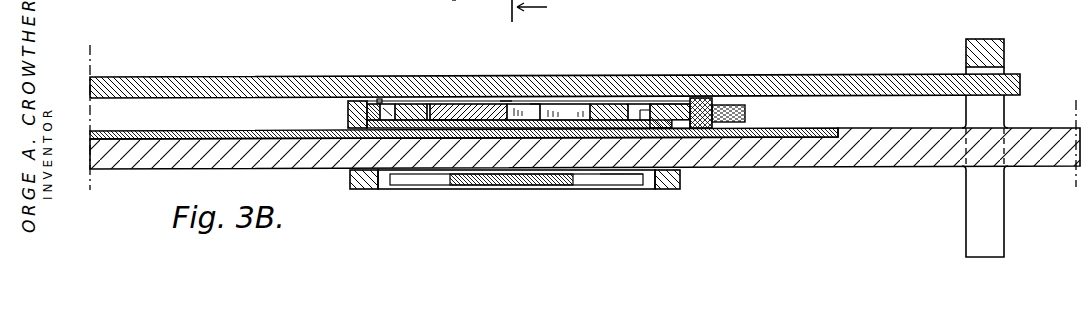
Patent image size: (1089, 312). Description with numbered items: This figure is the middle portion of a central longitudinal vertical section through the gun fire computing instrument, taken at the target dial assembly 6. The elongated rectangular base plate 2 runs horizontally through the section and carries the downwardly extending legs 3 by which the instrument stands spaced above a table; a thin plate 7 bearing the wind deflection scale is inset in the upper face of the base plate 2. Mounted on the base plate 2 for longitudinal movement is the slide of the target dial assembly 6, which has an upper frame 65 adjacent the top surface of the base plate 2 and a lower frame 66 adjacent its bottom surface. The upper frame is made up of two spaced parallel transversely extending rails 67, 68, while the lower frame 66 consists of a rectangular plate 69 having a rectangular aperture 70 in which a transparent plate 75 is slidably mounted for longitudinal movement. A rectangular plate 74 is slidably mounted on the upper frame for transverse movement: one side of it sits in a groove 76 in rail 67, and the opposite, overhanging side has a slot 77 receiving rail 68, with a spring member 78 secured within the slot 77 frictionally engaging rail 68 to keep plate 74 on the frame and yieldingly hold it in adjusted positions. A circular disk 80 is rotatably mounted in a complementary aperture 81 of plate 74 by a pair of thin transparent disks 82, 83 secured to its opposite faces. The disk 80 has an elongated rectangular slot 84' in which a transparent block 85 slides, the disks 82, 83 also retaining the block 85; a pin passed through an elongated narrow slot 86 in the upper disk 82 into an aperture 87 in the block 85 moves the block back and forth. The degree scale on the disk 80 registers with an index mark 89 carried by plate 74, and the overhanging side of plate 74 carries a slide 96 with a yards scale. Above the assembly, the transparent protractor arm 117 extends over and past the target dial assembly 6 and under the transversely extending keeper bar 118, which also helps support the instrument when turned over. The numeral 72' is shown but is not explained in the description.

The base plate 2 is at (961, 167).
The legs 3 is at (997, 222).
The target dial assembly 6 is at (508, 101).
The thin plate 7 is at (235, 133).
The upper frame 65 is at (348, 101).
The lower frame 66 is at (349, 198).
The rail 67 is at (362, 100).
The rail 68 is at (692, 99).
The rectangular plate 69 is at (667, 189).
The rectangular aperture 70 is at (623, 190).
The carriage 72' is at (438, 9).
The rectangular plate 74 is at (670, 115).
The transparent plate 75 is at (487, 183).
The groove 76 is at (347, 113).
The slot 77 is at (653, 113).
The spring member 78 is at (642, 133).
The circular disk 80 is at (612, 110).
The complementary aperture 81 is at (407, 104).
The thin transparent disk 82 is at (447, 101).
The thin transparent disk 83 is at (457, 123).
The elongated rectangular slot 84' is at (570, 80).
The transparent block 85 is at (483, 108).
The elongated narrow slot 86 is at (537, 101).
The aperture 87 is at (504, 102).
The index mark 89 is at (385, 104).
The slide 96 is at (725, 101).
The protractor arm 117 is at (253, 88).
The keeper bar 118 is at (982, 44).